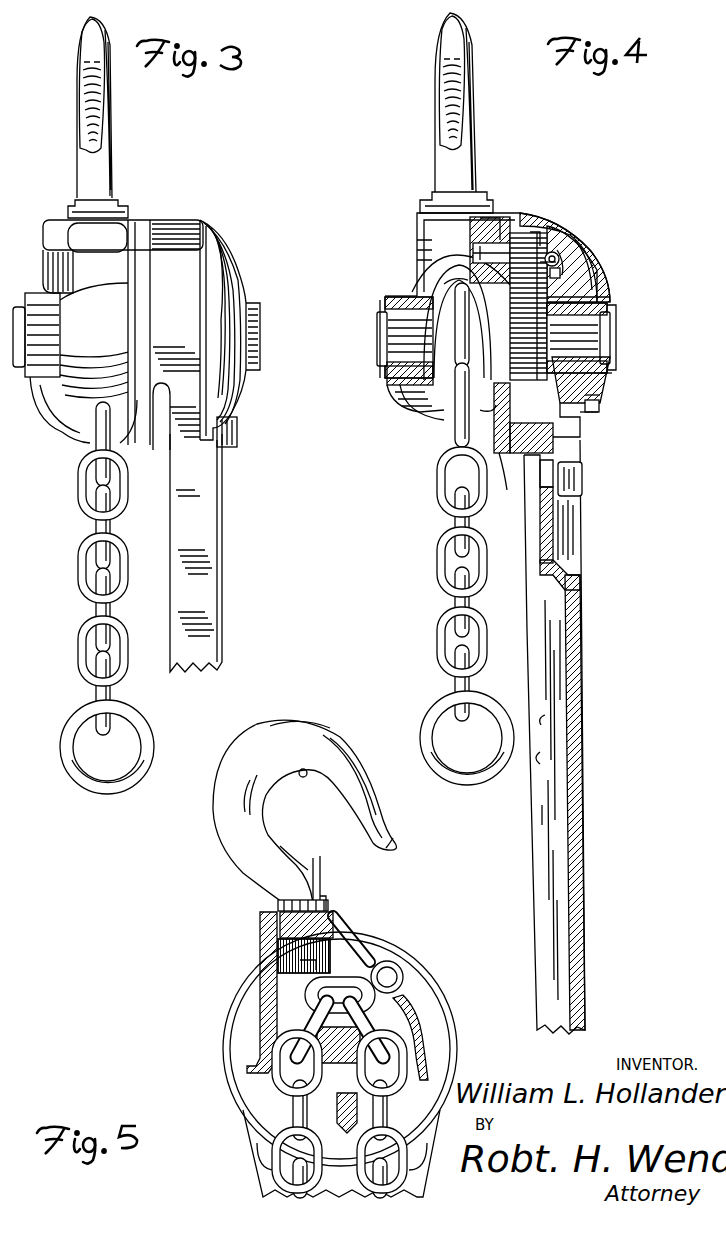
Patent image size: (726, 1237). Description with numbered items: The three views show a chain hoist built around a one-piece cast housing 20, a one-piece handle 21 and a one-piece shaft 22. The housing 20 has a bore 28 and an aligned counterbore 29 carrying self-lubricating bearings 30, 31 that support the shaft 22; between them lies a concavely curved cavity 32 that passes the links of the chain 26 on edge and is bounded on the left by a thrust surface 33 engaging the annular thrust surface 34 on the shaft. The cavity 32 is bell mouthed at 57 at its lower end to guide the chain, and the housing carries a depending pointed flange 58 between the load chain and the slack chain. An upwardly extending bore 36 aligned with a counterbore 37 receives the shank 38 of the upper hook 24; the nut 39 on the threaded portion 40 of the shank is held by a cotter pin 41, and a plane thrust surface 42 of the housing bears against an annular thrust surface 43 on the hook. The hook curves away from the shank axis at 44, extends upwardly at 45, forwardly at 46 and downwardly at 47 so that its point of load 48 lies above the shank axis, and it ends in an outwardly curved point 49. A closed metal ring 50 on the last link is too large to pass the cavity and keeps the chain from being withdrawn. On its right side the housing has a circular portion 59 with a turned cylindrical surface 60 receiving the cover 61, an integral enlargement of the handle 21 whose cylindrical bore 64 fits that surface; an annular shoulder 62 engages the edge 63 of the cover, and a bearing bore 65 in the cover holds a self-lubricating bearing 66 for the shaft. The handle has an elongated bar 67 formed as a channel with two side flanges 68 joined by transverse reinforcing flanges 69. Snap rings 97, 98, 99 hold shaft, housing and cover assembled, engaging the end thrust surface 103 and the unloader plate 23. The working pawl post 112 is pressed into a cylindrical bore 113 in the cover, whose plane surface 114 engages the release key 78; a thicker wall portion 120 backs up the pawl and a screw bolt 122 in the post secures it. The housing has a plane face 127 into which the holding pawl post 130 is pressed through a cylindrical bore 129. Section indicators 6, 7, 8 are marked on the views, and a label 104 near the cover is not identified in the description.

In FIG. 4, the section line 6 is at (553, 240).
In FIG. 3, the section line 7 is at (146, 180).
In FIG. 3, the section line 8 is at (148, 242).
In FIG. 3, the housing 20 is at (130, 250).
In FIG. 3, the handle 21 is at (209, 531).
In FIG. 4, the handle 21 is at (586, 602).
In FIG. 4, the shaft 22 is at (396, 325).
In FIG. 4, the unloader plate 23 is at (602, 380).
In FIG. 5, the hook 24 is at (314, 858).
In FIG. 4, the chain 26 is at (434, 571).
In FIG. 4, the bore 28 is at (395, 300).
In FIG. 4, the counterbore 29 is at (580, 262).
In FIG. 4, the self-lubricating bearing 30 is at (388, 372).
In FIG. 4, the self-lubricating bearing 31 is at (482, 396).
In FIG. 4, the cavity 32 is at (470, 285).
In FIG. 5, the cavity 32 is at (415, 1025).
In FIG. 4, the thrust surface 33 is at (432, 272).
In FIG. 4, the annular thrust surface 34 is at (425, 392).
In FIG. 5, the upwardly extending bore 36 is at (300, 950).
In FIG. 5, the counterbore 37 is at (282, 925).
In FIG. 5, the hook shank 38 is at (342, 911).
In FIG. 5, the nut 39 is at (312, 960).
In FIG. 5, the threaded portion 40 is at (305, 970).
In FIG. 5, the cotter pin 41 is at (378, 960).
In FIG. 5, the plane thrust surface 42 is at (280, 905).
In FIG. 5, the annular thrust surface 43 is at (322, 902).
In FIG. 5, the curved portion 44 is at (285, 846).
In FIG. 5, the upwardly extending portion 45 is at (264, 805).
In FIG. 5, the forwardly extending portion 46 is at (297, 722).
In FIG. 5, the downwardly extending portion 47 is at (374, 771).
In FIG. 5, the point of load 48 is at (308, 772).
In FIG. 5, the outwardly curved point 49 is at (395, 843).
In FIG. 3, the closed metal ring 50 is at (88, 783).
In FIG. 5, the bell mouth 57 is at (275, 1080).
In FIG. 3, the depending pointed flange 58 is at (62, 408).
In FIG. 4, the depending pointed flange 58 is at (420, 410).
In FIG. 3, the circular portion 59 is at (145, 293).
In FIG. 4, the circular portion 59 is at (505, 240).
In FIG. 4, the turned cylindrical surface 60 is at (532, 240).
In FIG. 4, the cover plate 61 is at (548, 262).
In FIG. 4, the annular shoulder 62 is at (520, 235).
In FIG. 4, the cover edge 63 is at (506, 452).
In FIG. 4, the cylindrical bore 64 is at (537, 232).
In FIG. 4, the bearing bore 65 is at (600, 298).
In FIG. 4, the self-lubricating bearing 66 is at (585, 350).
In FIG. 4, the elongated bar 67 is at (583, 722).
In FIG. 4, the side flanges 68 is at (550, 812).
In FIG. 4, the transverse reinforcing flanges 69 is at (548, 757).
In FIG. 4, the release key 78 is at (586, 480).
In FIG. 4, the snap ring 97 is at (380, 308).
In FIG. 4, the snap ring 98 is at (590, 275).
In FIG. 4, the snap ring 99 is at (608, 306).
In FIG. 4, the end thrust surface 103 is at (405, 382).
In FIG. 4, the bearing 104 is at (610, 372).
In FIG. 4, the working pawl post 112 is at (595, 414).
In FIG. 4, the cylindrical bore 113 is at (598, 405).
In FIG. 4, the plane surface 114 is at (598, 396).
In FIG. 4, the thicker wall portion 120 is at (526, 458).
In FIG. 4, the screw bolt 122 is at (505, 422).
In FIG. 4, the plane face 127 is at (560, 252).
In FIG. 4, the cylindrical bore 129 is at (483, 241).
In FIG. 4, the holding pawl post 130 is at (478, 218).